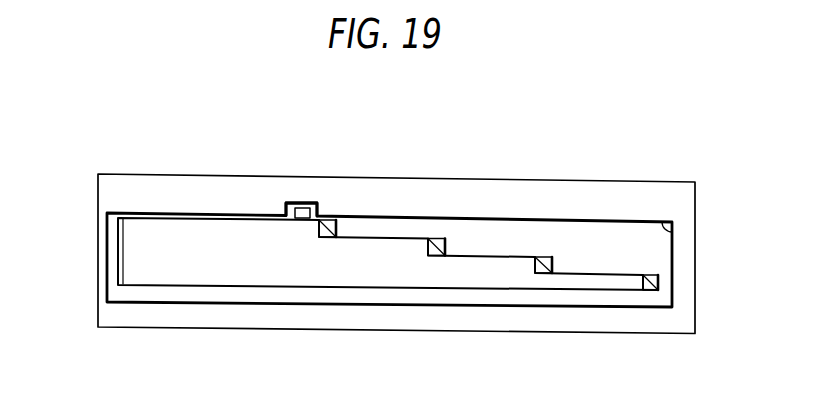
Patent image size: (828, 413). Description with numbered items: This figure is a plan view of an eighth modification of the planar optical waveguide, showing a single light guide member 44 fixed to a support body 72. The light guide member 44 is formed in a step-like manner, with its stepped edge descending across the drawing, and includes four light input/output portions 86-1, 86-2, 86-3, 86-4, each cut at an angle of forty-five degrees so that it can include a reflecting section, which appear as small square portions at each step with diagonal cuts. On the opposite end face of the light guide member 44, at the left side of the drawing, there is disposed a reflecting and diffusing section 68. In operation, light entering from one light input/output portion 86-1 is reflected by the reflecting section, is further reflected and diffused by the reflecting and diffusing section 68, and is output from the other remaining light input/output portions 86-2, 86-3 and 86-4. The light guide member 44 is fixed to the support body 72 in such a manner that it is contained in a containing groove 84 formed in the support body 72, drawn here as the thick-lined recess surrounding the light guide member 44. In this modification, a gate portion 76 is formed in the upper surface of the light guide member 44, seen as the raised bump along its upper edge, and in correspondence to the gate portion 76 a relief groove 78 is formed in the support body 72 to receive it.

The light guide member 44 is at (379, 272).
The reflecting and diffusing section 68 is at (113, 249).
The support body 72 is at (608, 191).
The gate portion 76 is at (302, 203).
The relief groove 78 is at (293, 206).
The containing groove 84 is at (663, 222).
The light input/output portion 86-1 is at (658, 281).
The light input/output portion 86-2 is at (543, 257).
The light input/output portion 86-3 is at (433, 238).
The light input/output portion 86-4 is at (324, 220).